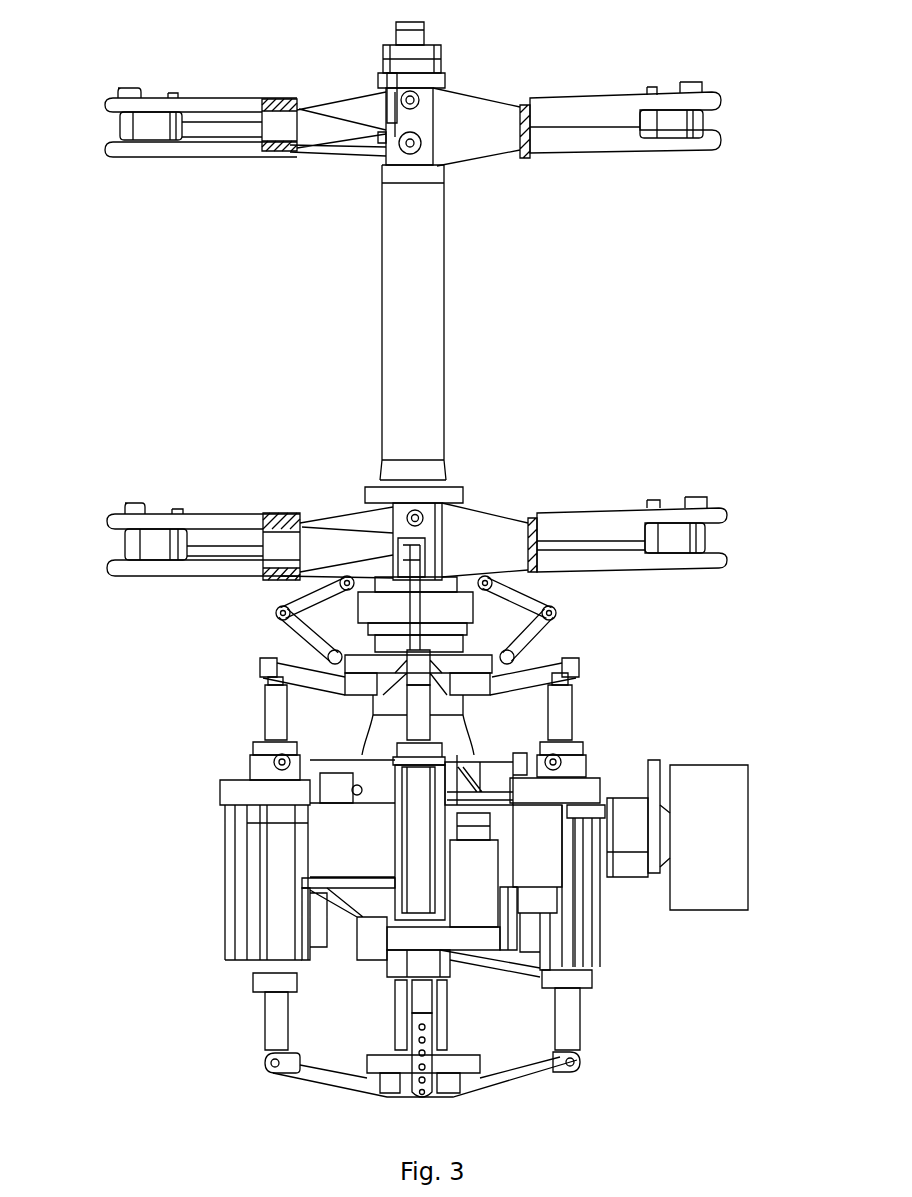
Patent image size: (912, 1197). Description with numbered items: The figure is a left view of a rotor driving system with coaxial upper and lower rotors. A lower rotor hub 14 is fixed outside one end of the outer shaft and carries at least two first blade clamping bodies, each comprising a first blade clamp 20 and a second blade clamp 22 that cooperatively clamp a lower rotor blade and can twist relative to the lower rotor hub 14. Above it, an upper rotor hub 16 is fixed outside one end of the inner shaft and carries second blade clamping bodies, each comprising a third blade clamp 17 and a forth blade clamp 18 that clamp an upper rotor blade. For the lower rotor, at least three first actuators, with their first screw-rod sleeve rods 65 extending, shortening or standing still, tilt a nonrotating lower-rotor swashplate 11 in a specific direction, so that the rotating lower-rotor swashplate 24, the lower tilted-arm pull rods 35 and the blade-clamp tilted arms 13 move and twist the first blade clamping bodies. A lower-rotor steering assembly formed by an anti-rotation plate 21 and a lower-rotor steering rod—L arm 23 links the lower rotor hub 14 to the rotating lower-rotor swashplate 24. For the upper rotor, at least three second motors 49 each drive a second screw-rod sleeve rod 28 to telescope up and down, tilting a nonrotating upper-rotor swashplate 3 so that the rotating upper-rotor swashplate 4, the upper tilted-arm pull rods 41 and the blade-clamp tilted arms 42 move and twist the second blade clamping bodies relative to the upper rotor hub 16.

The nonrotating upper-rotor swashplate 3 is at (537, 1086).
The rotating upper-rotor swashplate 4 is at (360, 1060).
The nonrotating lower-rotor swashplate 11 is at (305, 692).
The blade-clamp tilted arm 13 is at (332, 520).
The lower rotor hub 14 is at (491, 511).
The upper rotor hub 16 is at (494, 162).
The third blade clamp 17 is at (597, 96).
The forth blade clamp 18 is at (682, 156).
The first blade clamp 20 is at (627, 509).
The anti-rotation plate 21 is at (552, 580).
The second blade clamp 22 is at (682, 572).
The lower-rotor steering rod—L arm 23 is at (548, 645).
The rotating lower-rotor swashplate 24 is at (377, 661).
The second screw-rod sleeve rod 28 is at (565, 1018).
The lower tilted-arm pull rod 35 is at (395, 609).
The upper tilted-arm pull rod 41 is at (375, 100).
The blade-clamp tilted arm 42 is at (330, 148).
The second motor 49 is at (545, 848).
The first screw-rod sleeve rod 65 is at (576, 717).